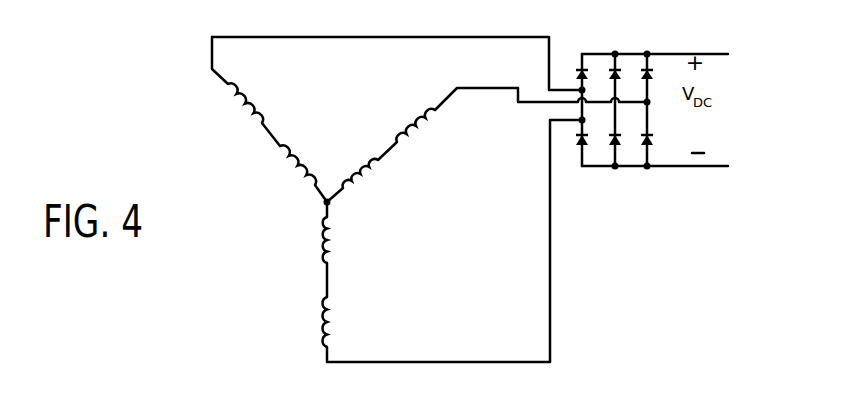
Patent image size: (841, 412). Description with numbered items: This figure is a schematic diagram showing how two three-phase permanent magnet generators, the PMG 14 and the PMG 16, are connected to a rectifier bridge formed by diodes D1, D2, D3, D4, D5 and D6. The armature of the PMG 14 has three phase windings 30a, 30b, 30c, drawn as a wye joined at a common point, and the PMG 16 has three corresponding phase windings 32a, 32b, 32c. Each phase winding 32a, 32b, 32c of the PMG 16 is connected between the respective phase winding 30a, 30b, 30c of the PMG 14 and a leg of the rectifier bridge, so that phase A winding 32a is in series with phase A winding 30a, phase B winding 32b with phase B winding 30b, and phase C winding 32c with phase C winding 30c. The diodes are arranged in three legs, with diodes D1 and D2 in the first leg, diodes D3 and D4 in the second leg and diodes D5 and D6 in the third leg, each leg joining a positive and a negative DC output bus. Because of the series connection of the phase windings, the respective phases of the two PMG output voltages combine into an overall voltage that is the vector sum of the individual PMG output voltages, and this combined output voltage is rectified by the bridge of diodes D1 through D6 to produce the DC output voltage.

The PMG 14 is at (334, 203).
The PMG 16 is at (340, 208).
The phase winding 30a is at (303, 165).
The phase winding 30b is at (351, 195).
The phase winding 30c is at (328, 262).
The phase winding 32a is at (242, 97).
The phase winding 32b is at (405, 146).
The phase winding 32c is at (328, 318).
The diode D1 is at (578, 72).
The diode D2 is at (578, 146).
The diode D3 is at (613, 71).
The diode D4 is at (618, 146).
The diode D5 is at (650, 71).
The diode D6 is at (650, 146).